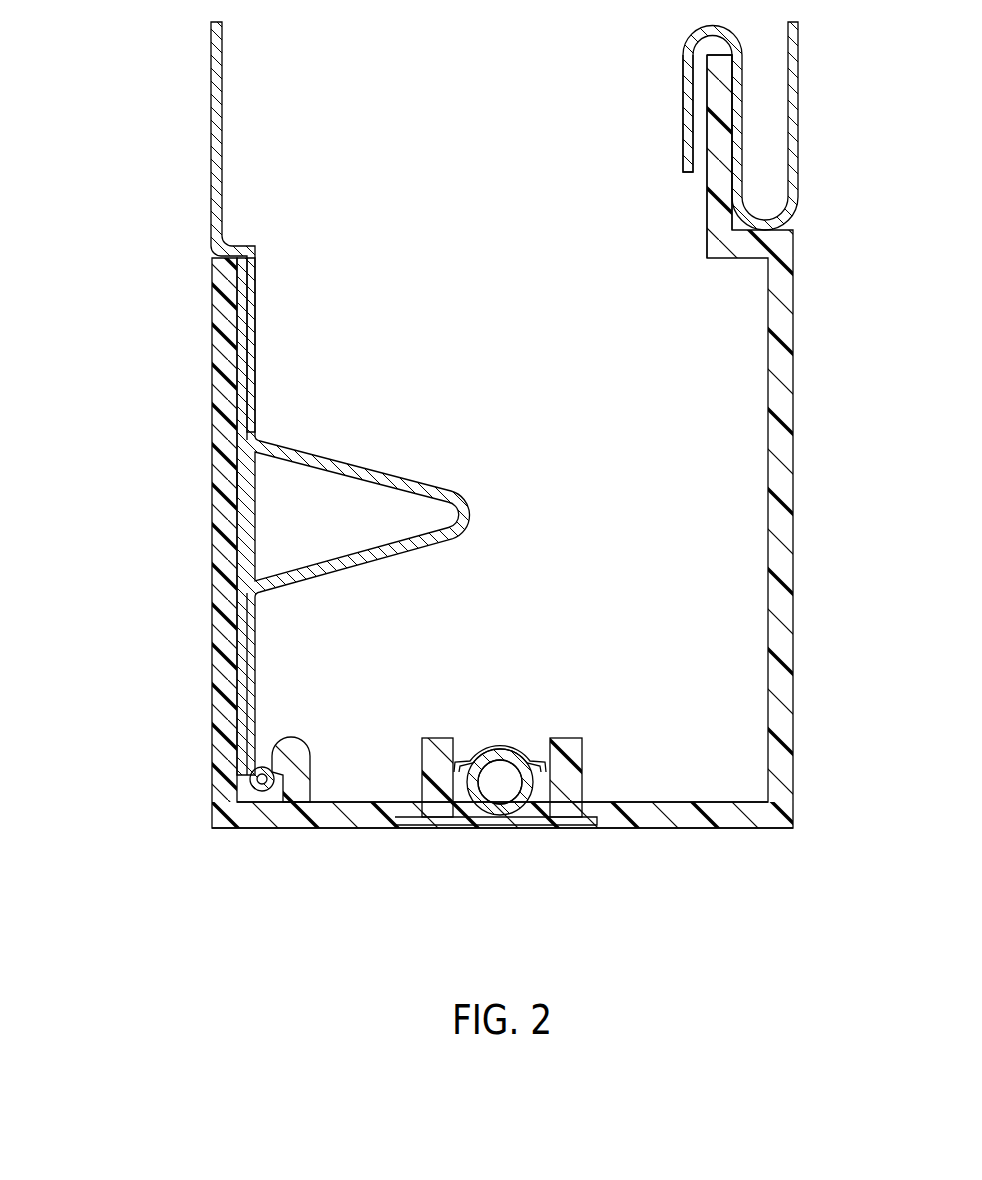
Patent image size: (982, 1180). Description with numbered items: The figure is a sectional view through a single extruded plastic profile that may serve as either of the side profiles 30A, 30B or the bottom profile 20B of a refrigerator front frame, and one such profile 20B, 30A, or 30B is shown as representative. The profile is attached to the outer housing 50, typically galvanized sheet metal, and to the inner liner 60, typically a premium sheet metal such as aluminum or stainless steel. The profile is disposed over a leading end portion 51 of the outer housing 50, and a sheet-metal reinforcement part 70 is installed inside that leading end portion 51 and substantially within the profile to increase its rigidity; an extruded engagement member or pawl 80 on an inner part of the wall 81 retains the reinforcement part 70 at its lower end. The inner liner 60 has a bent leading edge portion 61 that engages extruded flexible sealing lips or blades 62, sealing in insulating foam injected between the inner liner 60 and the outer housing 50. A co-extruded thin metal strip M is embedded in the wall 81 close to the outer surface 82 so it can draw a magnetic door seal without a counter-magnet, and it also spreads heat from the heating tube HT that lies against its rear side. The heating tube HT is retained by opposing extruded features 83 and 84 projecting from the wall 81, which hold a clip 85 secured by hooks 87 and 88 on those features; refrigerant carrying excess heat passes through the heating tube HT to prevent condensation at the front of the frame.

The bottom profile 20B is at (212, 468).
The side profile 30A is at (415, 441).
The side profile 30B is at (415, 441).
The outer housing 50 is at (211, 125).
The leading end portion 51 is at (247, 487).
The inner liner 60 is at (780, 146).
The bent leading edge portion 61 is at (700, 95).
The flexible sealing lips or blades 62 is at (703, 135).
The reinforcement part 70 is at (358, 568).
The engagement member or pawl 80 is at (310, 762).
The wall 81 is at (345, 828).
The outer surface 82 is at (380, 830).
The extruded feature 83 is at (432, 740).
The extruded feature 84 is at (565, 738).
The clip 85 is at (528, 748).
The hook 87 is at (458, 750).
The hook 88 is at (543, 750).
The heating tube HT is at (492, 820).
The thin metal strip M is at (595, 830).